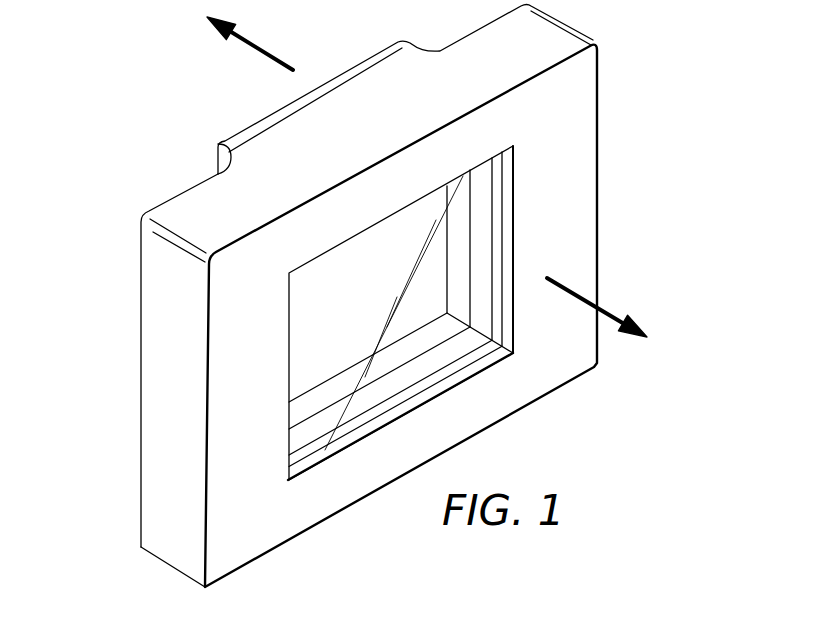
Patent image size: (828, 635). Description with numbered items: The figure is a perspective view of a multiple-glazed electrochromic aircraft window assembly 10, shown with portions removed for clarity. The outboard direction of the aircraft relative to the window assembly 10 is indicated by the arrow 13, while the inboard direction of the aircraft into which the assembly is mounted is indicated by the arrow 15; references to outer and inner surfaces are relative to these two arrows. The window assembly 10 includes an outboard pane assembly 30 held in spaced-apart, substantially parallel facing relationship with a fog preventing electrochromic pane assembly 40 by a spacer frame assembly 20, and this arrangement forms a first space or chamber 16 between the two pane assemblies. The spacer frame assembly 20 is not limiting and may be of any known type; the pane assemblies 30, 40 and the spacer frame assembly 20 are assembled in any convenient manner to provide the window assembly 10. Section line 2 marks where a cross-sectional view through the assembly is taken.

The electrochromic aircraft window assembly 10 is at (110, 507).
The arrow 13 is at (262, 55).
The arrow 15 is at (612, 310).
The first space or chamber 16 is at (486, 296).
The spacer frame assembly 20 is at (506, 180).
The outboard pane assembly 30 is at (458, 252).
The fog preventing electrochromic pane assembly 40 is at (497, 209).
The section line 2- 2 is at (167, 377).